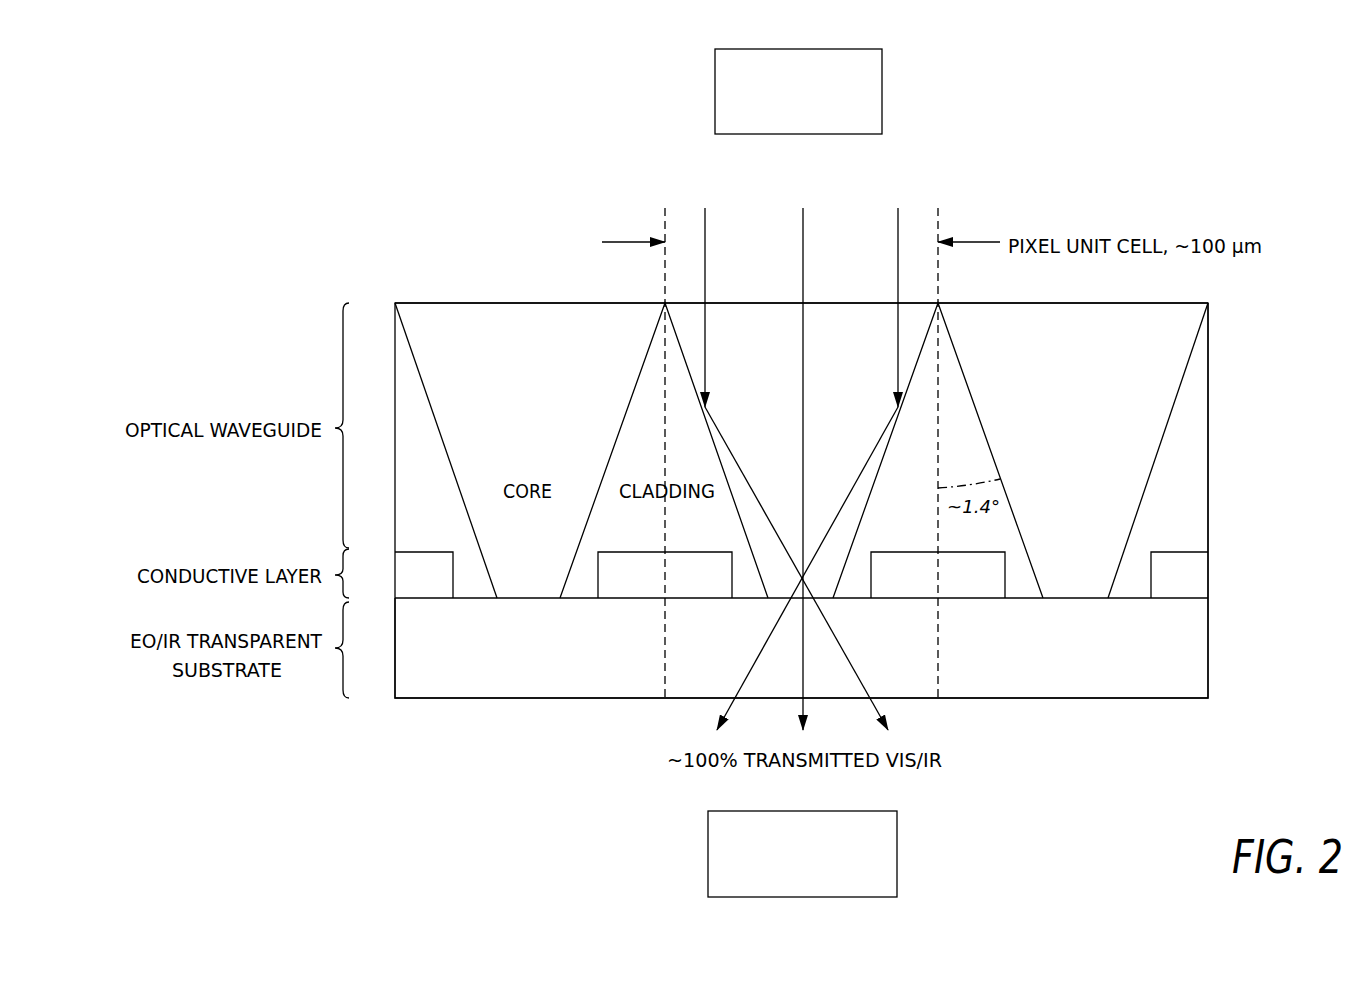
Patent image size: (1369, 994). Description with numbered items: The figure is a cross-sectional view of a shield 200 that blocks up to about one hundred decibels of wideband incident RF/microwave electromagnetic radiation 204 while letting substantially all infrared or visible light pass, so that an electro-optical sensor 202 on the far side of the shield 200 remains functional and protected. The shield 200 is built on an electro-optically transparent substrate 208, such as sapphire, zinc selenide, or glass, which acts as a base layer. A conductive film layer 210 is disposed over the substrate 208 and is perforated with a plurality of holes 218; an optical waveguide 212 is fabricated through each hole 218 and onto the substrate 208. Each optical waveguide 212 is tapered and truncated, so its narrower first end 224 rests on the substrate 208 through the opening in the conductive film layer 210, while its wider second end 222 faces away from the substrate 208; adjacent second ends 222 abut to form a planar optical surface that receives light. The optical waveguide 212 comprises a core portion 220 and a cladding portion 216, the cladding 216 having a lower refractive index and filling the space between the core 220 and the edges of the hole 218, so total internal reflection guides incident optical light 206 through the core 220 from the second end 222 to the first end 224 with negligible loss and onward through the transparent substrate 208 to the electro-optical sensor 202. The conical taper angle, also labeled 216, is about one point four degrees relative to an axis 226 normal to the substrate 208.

The shield 200 is at (383, 190).
The electro-optical sensor 202 is at (897, 855).
The incident RF/microwave electromagnetic radiation 204 is at (882, 92).
The incident optical light 206 is at (880, 167).
The electro-optically transparent substrate 208 is at (498, 668).
The conductive film layer 210 is at (1187, 573).
The optical waveguide 212 is at (1138, 432).
The cladding portion 216 is at (637, 410).
The hole 218 is at (1130, 565).
The core portion 220 is at (1126, 360).
The second end 222 is at (455, 303).
The first end 224 is at (515, 598).
The axis 226 is at (938, 370).